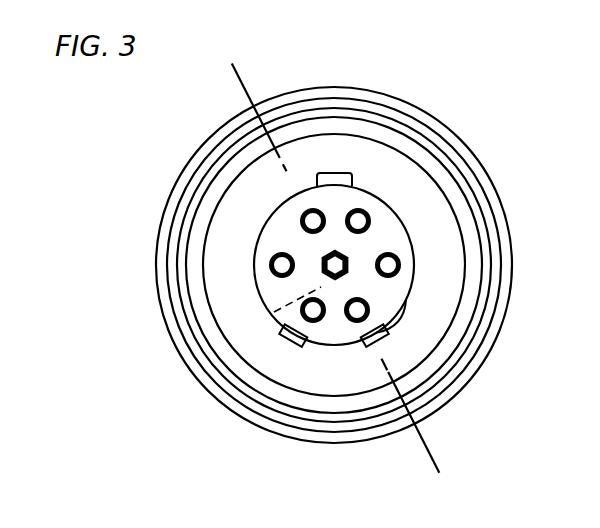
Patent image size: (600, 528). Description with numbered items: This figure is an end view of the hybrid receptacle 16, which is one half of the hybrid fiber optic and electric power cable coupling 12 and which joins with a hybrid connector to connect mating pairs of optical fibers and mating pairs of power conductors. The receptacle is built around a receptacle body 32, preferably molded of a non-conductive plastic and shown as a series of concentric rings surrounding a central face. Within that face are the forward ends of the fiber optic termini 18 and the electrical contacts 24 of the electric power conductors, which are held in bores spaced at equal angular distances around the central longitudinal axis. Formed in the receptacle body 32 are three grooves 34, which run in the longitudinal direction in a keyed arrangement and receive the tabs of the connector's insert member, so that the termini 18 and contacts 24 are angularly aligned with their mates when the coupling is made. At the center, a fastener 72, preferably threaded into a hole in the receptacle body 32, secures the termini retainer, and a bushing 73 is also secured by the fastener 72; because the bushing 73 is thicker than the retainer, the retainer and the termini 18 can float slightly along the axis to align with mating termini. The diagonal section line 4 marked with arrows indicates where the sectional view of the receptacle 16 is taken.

The hybrid fiber optic and electric power cable coupling 12 is at (422, 78).
The hybrid receptacle 16 is at (450, 130).
The receptacle body 32 is at (432, 195).
The termini 18 is at (310, 221).
The contacts 24 is at (280, 265).
The grooves 34 is at (406, 304).
The fastener 72 is at (321, 264).
The bushing 73 is at (277, 312).
The section line 4- 4 is at (285, 46).